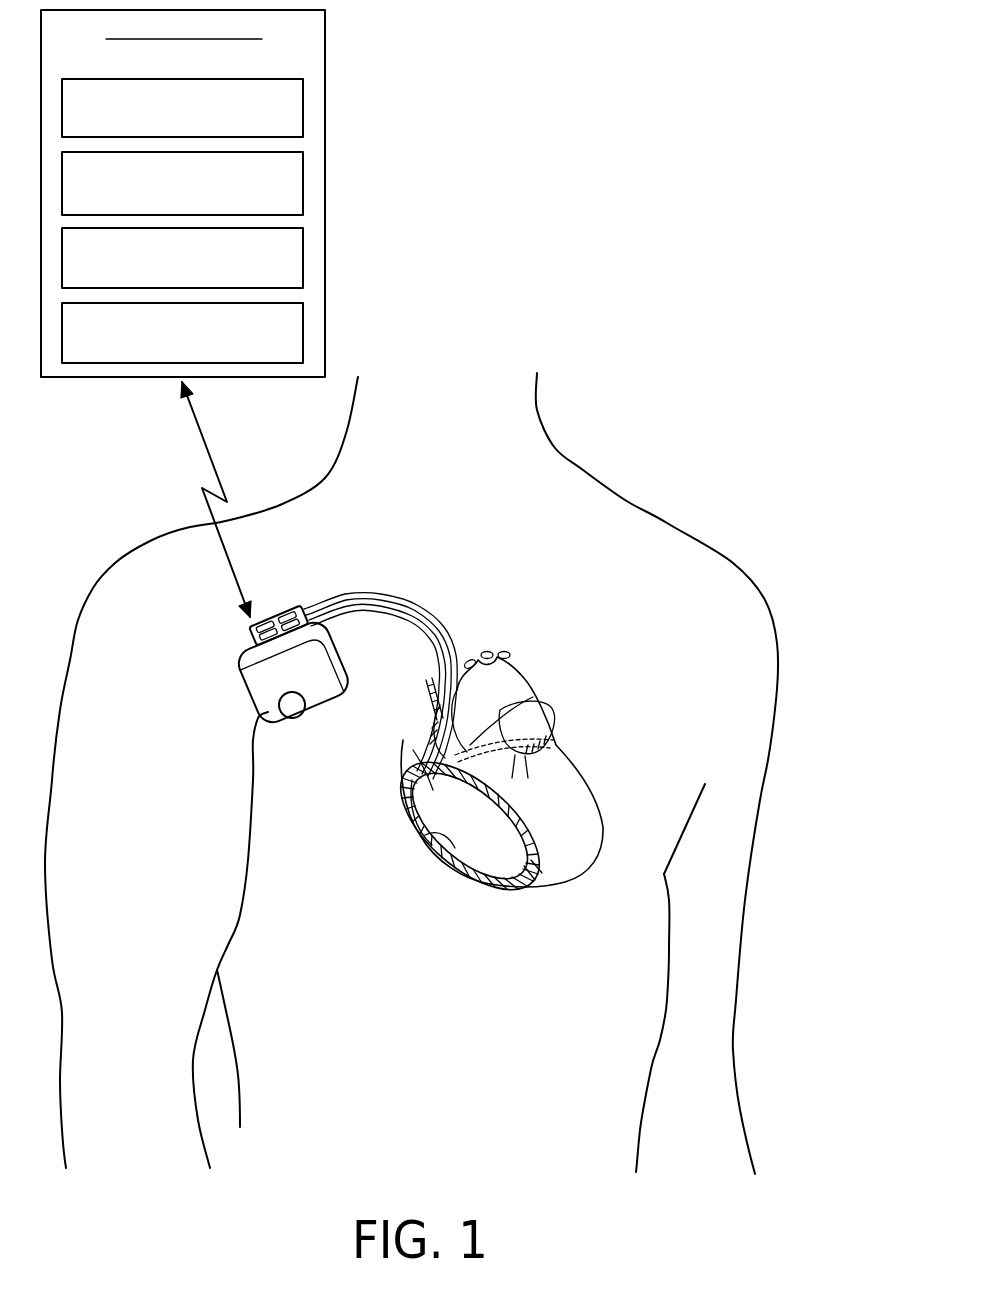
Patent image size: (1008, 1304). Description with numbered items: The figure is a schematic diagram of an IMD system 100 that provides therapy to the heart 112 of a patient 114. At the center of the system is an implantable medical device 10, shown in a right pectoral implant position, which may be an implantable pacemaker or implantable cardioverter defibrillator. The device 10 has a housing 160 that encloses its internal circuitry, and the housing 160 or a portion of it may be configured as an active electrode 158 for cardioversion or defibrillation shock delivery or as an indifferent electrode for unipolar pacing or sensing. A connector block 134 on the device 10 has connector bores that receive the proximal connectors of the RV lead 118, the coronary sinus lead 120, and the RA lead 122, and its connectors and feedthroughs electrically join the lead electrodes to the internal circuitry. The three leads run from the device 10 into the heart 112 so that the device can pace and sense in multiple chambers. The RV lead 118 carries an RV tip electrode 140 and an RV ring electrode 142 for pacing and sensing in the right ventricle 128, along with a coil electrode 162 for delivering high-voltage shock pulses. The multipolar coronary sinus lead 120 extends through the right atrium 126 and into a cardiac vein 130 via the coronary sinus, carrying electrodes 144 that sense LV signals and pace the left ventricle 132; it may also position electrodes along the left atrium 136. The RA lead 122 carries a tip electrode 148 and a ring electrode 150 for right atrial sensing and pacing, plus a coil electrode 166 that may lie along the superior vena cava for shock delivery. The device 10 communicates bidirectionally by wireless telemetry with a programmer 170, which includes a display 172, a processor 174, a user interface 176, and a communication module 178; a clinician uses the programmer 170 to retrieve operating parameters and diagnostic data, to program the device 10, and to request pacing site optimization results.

The implantable medical device 10 is at (266, 715).
The IMD system 100 is at (575, 330).
The heart 112 is at (488, 792).
The patient 114 is at (668, 525).
The RV lead 118 is at (406, 667).
The coronary sinus lead 120 is at (447, 633).
The RA lead 122 is at (398, 630).
The right atrium 126 is at (423, 797).
The right ventricle 128 is at (467, 843).
The cardiac vein 130 is at (468, 735).
The left ventricle 132 is at (583, 818).
The connector block 134 is at (232, 660).
The left atrium 136 is at (525, 700).
The RV tip electrode 140 is at (527, 870).
The RV ring electrode 142 is at (524, 866).
The electrodes 144 is at (552, 750).
The tip electrode 148 is at (430, 723).
The ring electrode 150 is at (413, 750).
The active electrode 158 is at (302, 716).
The housing 160 is at (243, 940).
The coil electrode 162 is at (457, 808).
The coil electrode 166 is at (428, 705).
The programmer 170 is at (165, 70).
The display 172 is at (164, 131).
The processor 174 is at (164, 206).
The user interface 176 is at (164, 281).
The communication module 178 is at (164, 356).